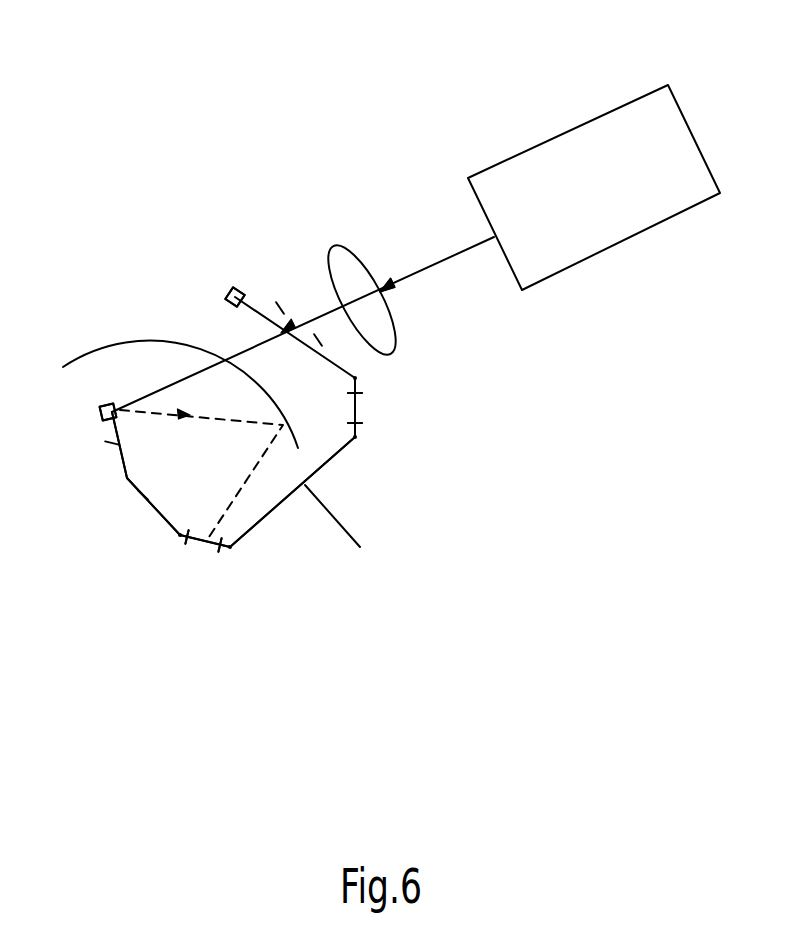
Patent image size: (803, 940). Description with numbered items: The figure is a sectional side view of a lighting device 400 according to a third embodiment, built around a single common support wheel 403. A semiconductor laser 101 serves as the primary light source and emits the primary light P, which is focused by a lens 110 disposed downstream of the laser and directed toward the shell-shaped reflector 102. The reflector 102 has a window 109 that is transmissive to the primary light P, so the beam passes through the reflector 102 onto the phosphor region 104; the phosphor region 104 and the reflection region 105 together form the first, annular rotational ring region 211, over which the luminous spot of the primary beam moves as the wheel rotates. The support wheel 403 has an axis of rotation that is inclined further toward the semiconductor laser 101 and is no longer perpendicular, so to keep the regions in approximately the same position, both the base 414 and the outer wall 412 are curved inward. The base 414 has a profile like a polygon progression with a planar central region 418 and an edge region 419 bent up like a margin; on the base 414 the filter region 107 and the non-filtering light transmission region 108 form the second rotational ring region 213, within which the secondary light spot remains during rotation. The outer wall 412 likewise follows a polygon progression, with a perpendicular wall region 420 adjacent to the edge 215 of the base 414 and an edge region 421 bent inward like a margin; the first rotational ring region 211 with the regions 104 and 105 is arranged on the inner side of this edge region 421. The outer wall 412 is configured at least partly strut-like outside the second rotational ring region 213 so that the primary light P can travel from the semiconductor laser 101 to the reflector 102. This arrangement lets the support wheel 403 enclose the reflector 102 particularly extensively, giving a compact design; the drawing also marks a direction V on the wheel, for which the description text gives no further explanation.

The lighting device 400 is at (250, 117).
The semiconductor laser 101 is at (572, 157).
The lens 110 is at (342, 260).
The window 109 is at (302, 317).
The reflection region 105 is at (233, 290).
The first rotational ring region 211 is at (233, 290).
The phosphor region 104 is at (100, 408).
The reflector 102 is at (63, 367).
The edge of the base 215 is at (355, 375).
The non-filtering light transmission region 108 is at (360, 402).
The second rotational ring region 213 is at (273, 472).
The filter region 107 is at (197, 547).
The edge region of the outer wall 421 is at (107, 435).
The outer wall 412 is at (123, 477).
The perpendicular wall region 420 is at (130, 490).
The common support wheel 403 is at (137, 498).
The edge region of the base 419 is at (228, 548).
The planar central region 418 is at (260, 523).
The base 414 is at (347, 448).
The primary light P is at (432, 265).
The normal direction V is at (350, 530).